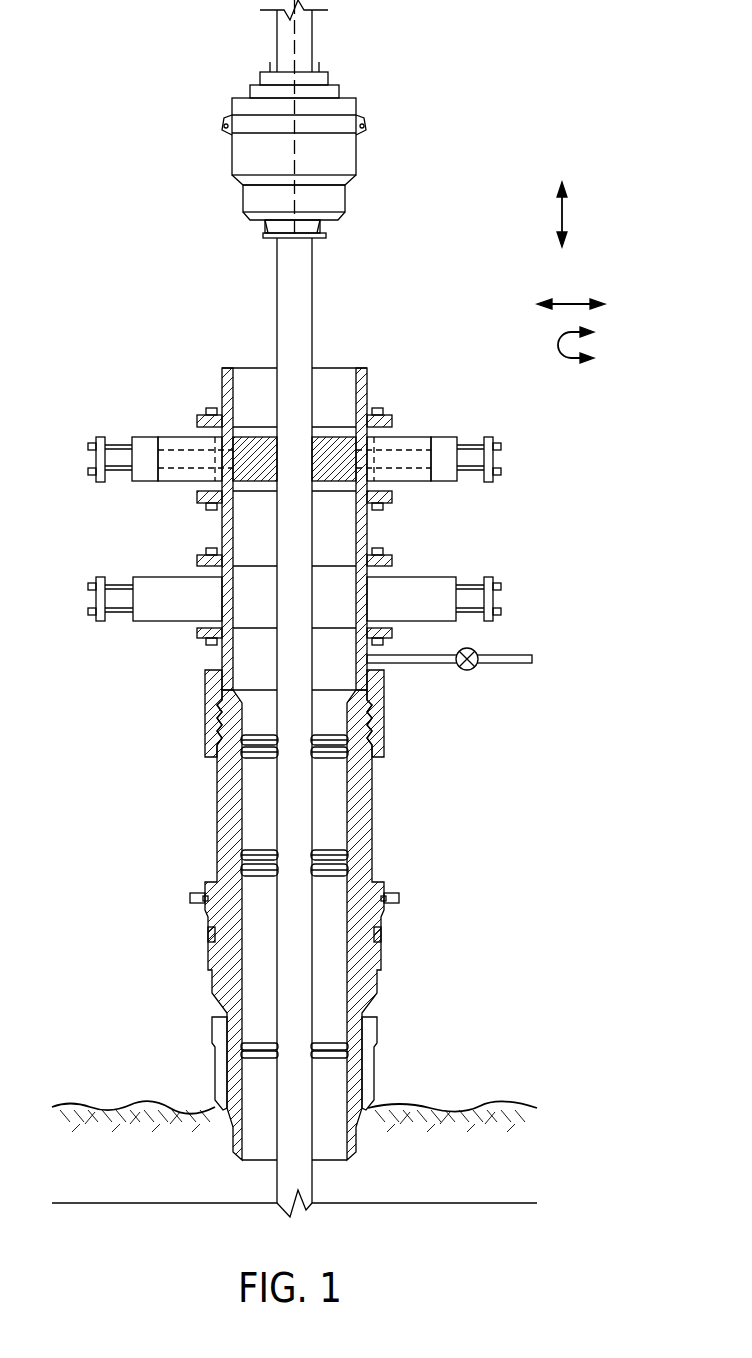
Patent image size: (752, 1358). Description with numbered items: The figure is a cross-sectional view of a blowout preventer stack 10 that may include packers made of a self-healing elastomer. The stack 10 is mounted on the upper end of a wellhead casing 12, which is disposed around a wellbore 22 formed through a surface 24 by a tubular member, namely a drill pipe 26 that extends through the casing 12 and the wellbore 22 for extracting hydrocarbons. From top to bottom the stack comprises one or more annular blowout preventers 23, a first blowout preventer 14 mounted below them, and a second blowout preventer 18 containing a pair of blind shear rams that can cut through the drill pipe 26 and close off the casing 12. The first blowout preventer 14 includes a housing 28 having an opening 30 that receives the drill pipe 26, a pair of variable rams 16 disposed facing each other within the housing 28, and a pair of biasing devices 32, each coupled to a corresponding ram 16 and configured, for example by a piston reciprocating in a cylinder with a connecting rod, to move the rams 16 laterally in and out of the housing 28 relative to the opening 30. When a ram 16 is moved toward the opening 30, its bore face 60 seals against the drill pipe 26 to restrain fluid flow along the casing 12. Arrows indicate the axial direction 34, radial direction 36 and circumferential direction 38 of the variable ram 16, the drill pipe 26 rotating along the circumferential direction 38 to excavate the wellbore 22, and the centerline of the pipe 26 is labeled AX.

The blowout preventer stack 10 is at (560, 535).
The wellhead casing 12 is at (412, 820).
The first blowout preventer 14 is at (334, 490).
The variable rams 16 is at (340, 445).
The second blowout preventer 18 is at (553, 592).
The wellbore 22 is at (222, 1222).
The annular blowout preventer 23 is at (395, 153).
The surface 24 is at (463, 1108).
The drill pipe 26 is at (277, 384).
The housing 28 is at (415, 517).
The opening 30 is at (318, 420).
The biasing devices 32 is at (294, 485).
The axial direction 34 is at (585, 231).
The radial direction 36 is at (590, 284).
The circumferential direction 38 is at (563, 383).
The bore face 60 is at (330, 506).
The longitudinal axis AX is at (345, 24).